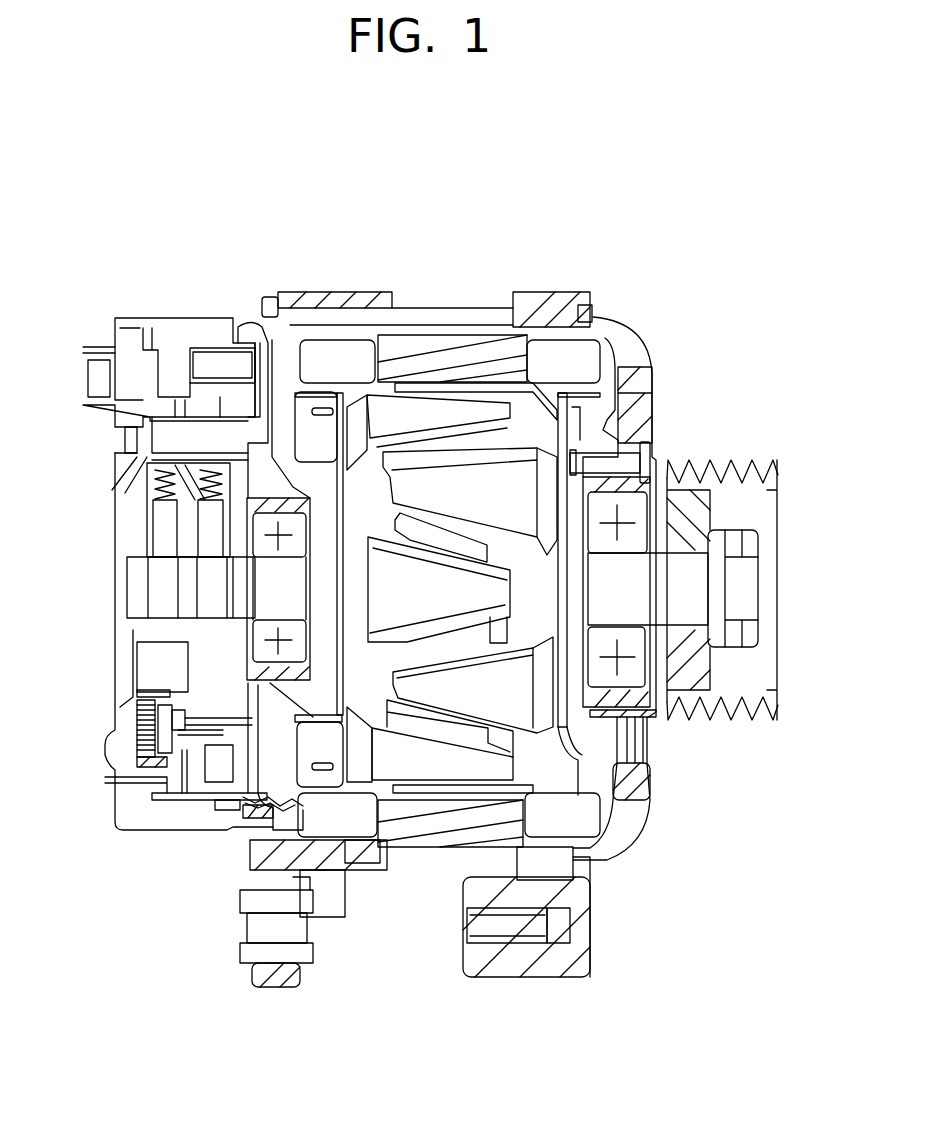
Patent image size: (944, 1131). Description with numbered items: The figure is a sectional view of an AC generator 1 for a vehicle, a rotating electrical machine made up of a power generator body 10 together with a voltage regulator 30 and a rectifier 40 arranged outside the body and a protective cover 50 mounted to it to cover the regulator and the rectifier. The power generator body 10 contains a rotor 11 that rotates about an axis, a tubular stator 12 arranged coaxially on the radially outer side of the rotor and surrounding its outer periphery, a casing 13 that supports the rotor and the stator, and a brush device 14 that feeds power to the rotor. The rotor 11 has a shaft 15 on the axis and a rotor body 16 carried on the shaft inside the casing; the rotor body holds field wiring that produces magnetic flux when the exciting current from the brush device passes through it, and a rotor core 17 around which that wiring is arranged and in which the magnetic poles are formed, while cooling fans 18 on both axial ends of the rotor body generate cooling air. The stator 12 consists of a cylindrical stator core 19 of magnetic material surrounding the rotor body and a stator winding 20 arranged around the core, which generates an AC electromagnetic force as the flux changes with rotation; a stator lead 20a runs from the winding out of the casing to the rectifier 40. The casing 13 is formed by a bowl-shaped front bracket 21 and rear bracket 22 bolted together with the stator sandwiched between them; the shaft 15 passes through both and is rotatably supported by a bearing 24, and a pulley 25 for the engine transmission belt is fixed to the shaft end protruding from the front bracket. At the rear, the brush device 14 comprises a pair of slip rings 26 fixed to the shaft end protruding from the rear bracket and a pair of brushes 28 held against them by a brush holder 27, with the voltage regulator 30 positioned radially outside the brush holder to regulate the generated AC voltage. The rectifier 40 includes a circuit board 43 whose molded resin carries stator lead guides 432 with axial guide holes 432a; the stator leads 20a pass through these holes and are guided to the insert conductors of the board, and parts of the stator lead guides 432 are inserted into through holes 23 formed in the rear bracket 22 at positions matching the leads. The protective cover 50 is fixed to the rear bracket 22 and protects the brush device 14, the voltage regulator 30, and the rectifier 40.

The AC generator 1 is at (598, 188).
The power generator body 10 is at (668, 295).
The rotor 11 is at (353, 393).
The stator 12 is at (457, 353).
The casing 13 is at (650, 340).
The brush device 14 is at (150, 525).
The shaft 15 is at (667, 575).
The rotor body 16 is at (528, 703).
The rotor core 17 is at (380, 760).
The cooling fans 18 is at (308, 765).
The stator core 19 is at (520, 300).
The stator winding 20 is at (356, 357).
The stator lead 20a is at (187, 792).
The front bracket 21 is at (655, 372).
The rear bracket 22 is at (243, 345).
The through holes 23 is at (255, 813).
The bearing 24 is at (652, 467).
The pulley 25 is at (705, 715).
The slip rings 26 is at (160, 583).
The brush holder 27 is at (132, 458).
The brushes 28 is at (163, 510).
The voltage regulator 30 is at (176, 352).
The rectifier 40 is at (130, 740).
The circuit board 43 is at (188, 810).
The protective cover 50 is at (112, 807).
The stator lead guides 432 is at (195, 815).
The guide holes 432a is at (218, 807).